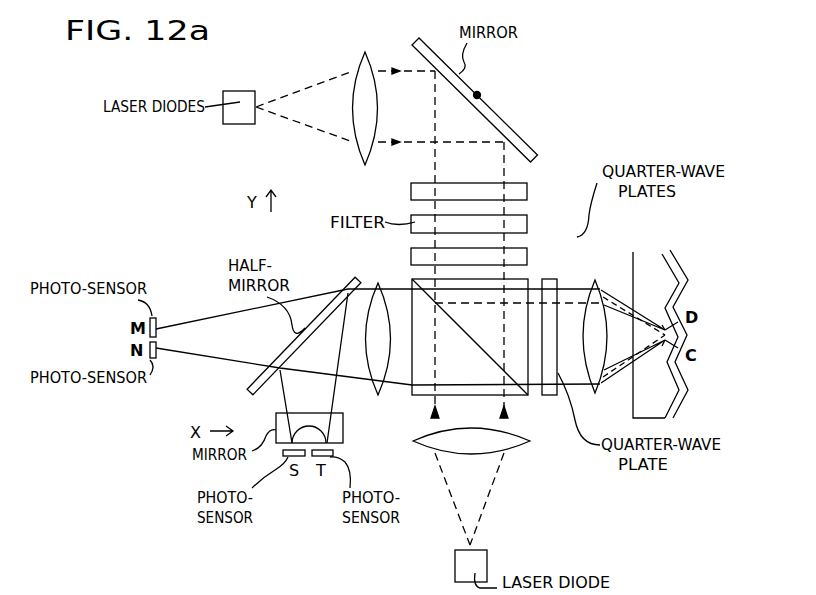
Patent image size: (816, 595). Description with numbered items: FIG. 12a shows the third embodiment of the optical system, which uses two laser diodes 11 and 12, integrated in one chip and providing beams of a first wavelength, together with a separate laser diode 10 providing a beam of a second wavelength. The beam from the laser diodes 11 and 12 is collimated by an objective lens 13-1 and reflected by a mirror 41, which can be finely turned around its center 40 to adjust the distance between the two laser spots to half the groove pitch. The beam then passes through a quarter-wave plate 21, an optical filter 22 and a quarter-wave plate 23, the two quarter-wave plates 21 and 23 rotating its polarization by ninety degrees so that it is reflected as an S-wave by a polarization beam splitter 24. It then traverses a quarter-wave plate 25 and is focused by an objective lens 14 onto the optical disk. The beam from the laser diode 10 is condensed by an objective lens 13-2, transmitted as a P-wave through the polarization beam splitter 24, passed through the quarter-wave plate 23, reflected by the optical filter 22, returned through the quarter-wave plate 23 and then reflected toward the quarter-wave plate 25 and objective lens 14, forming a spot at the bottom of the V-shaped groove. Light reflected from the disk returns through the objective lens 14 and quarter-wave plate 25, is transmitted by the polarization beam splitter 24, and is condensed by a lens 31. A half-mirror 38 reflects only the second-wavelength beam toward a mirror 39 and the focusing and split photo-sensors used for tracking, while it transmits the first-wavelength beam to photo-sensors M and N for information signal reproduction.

The laser diode 10 is at (487, 562).
The laser diode 11 is at (237, 89).
The laser diode 12 is at (240, 91).
The objective lens 13-1 is at (360, 146).
The objective lens 13-2 is at (525, 445).
The objective lens 14 is at (598, 394).
The quarter-wave plate 21 is at (594, 173).
The optical filter 22 is at (527, 225).
The quarter-wave plate 23 is at (527, 252).
The polarization beam splitter 24 is at (418, 396).
The quarter-wave plate 25 is at (550, 396).
The lens 31 is at (378, 396).
The half-mirror 38 is at (349, 290).
The mirror 39 is at (343, 432).
The center of mirror 40 is at (480, 93).
The mirror 41 is at (528, 142).